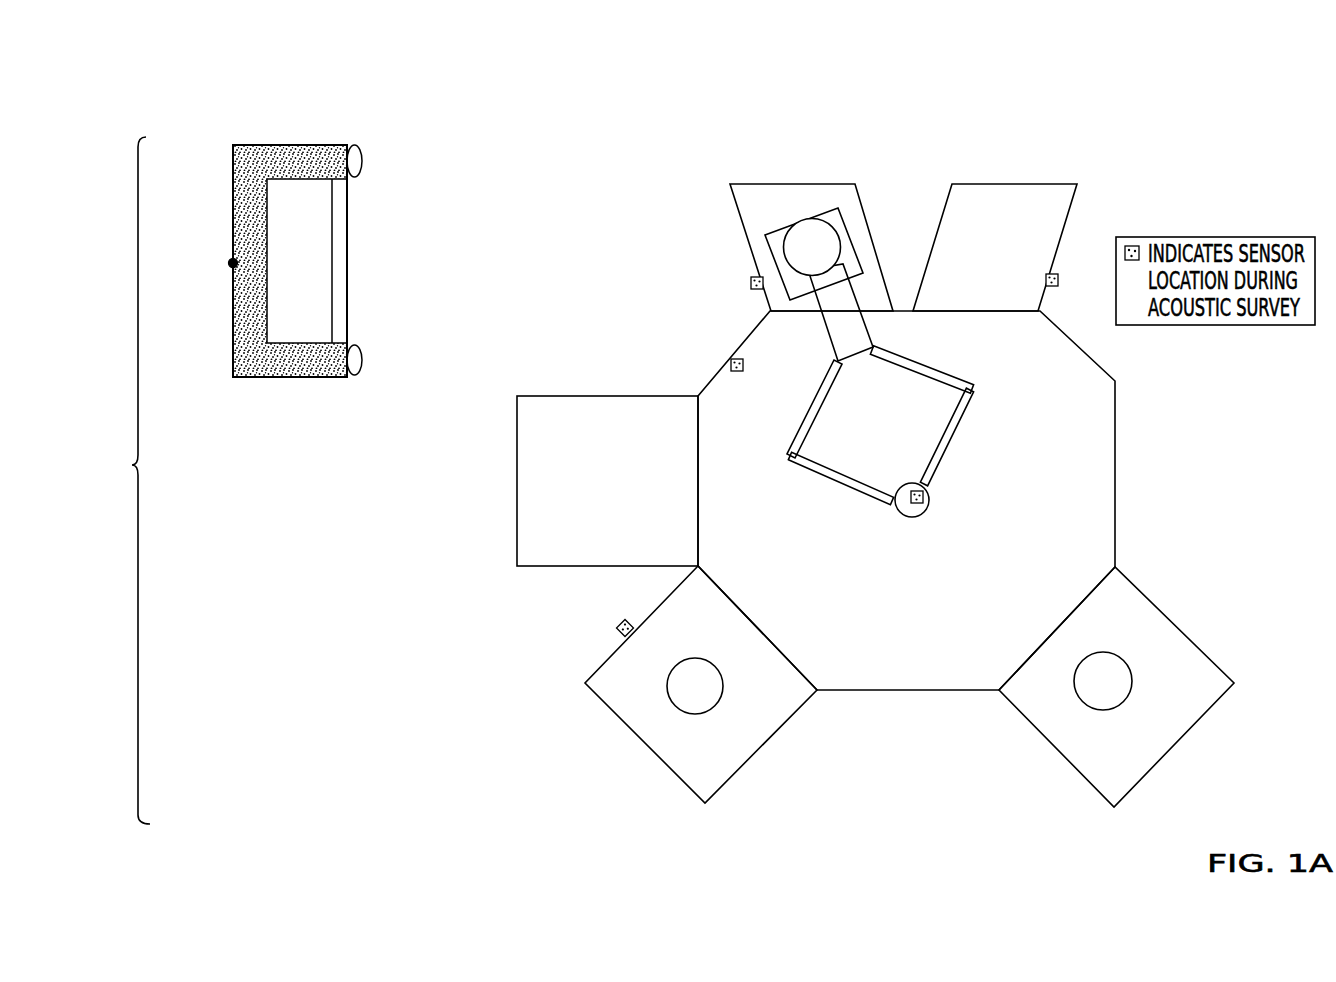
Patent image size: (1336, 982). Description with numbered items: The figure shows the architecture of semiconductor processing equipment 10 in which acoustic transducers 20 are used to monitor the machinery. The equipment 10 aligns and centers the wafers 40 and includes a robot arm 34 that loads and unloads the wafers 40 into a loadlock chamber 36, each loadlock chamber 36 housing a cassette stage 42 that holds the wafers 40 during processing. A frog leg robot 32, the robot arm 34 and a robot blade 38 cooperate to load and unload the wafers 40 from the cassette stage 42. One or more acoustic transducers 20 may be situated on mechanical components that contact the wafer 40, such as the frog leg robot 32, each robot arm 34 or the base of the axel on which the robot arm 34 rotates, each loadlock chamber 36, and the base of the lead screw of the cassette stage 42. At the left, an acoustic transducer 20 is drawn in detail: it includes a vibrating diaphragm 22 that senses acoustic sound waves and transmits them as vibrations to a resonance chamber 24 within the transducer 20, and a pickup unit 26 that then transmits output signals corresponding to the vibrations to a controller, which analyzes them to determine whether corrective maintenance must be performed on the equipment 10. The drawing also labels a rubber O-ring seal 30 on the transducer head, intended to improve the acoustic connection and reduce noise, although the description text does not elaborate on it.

The semiconductor processing equipment 10 is at (874, 482).
The acoustic transducer 20 is at (332, 285).
The vibrating diaphragm 22 is at (348, 310).
The resonance chamber 24 is at (317, 247).
The pickup unit 26 is at (233, 263).
The rubber O-ring seal 30 is at (356, 374).
The frog leg robot 32 is at (875, 452).
The robot arm 34 is at (923, 365).
The loadlock chamber 36 is at (1003, 184).
The robot blade 38 is at (826, 337).
The wafer 40 is at (841, 239).
The cassette stage 42 is at (722, 243).